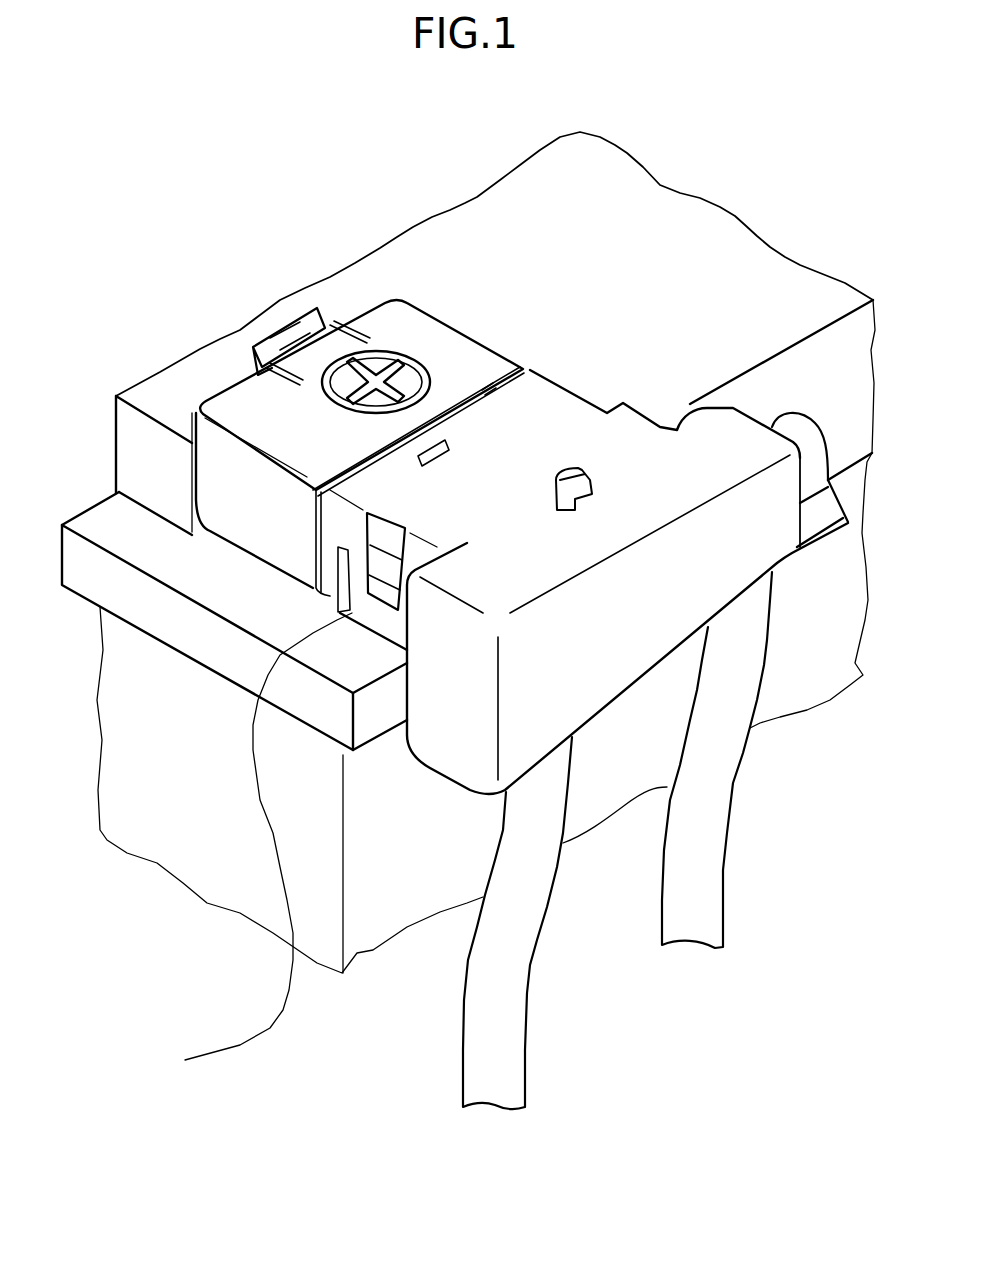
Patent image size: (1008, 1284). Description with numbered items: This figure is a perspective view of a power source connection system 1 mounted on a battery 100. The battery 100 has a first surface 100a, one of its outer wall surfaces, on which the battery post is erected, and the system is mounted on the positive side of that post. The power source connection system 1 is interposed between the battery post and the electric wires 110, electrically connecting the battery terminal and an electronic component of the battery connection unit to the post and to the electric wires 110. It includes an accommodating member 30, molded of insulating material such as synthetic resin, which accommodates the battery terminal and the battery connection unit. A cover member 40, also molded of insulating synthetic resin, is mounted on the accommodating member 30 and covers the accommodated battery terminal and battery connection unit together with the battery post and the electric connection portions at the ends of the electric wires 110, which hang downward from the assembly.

The power source connection system 1 is at (352, 298).
The accommodating member 30 is at (250, 845).
The cover member 40 is at (532, 417).
The battery 100 is at (478, 217).
The first surface 100a is at (100, 520).
The electric wires 110 is at (713, 898).